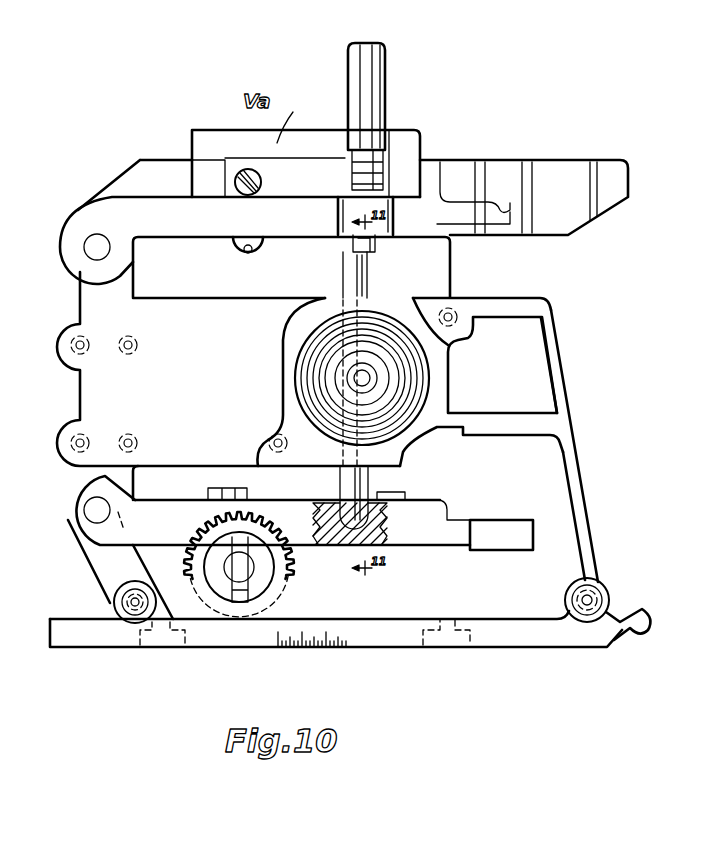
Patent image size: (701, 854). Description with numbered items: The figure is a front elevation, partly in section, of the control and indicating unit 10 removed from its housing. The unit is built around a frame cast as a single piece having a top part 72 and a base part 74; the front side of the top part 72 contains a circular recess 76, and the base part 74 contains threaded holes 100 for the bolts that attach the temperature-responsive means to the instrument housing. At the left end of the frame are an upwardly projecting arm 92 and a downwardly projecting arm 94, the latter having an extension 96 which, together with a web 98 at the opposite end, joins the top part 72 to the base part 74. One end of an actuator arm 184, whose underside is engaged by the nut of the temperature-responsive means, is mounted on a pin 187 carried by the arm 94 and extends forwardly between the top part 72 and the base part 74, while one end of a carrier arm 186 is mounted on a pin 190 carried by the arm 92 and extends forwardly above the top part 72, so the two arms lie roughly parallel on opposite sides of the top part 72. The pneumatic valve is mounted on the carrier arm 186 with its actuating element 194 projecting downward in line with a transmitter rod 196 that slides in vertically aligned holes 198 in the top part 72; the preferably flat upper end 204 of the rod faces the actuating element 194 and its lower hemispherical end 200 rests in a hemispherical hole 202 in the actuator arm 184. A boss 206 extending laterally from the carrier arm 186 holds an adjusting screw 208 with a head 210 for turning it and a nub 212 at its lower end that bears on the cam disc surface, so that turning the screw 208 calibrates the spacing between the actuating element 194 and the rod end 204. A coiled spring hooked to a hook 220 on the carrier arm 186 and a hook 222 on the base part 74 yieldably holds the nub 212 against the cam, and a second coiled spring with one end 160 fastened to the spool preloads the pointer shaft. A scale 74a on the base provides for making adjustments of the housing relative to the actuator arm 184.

The assembly 10 is at (594, 466).
The top part 72 is at (204, 396).
The base part 74 is at (548, 645).
The scale 74a is at (297, 648).
The circular recess 76 is at (405, 333).
The upwardly projecting arm 92 is at (133, 262).
The downwardly projecting arm 94 is at (100, 470).
The extension 96 is at (105, 566).
The web 98 is at (588, 525).
The threaded holes 100 is at (455, 620).
The end of coiled spring 160 is at (372, 362).
The actuator arm 184 is at (448, 540).
The carrier arm 186 is at (200, 224).
The pin 187 is at (92, 518).
The pin 190 is at (85, 247).
The actuating element 194 is at (350, 245).
The transmitter rod 196 is at (325, 300).
The vertically aligned holes 198 is at (372, 300).
The lower hemispherical end 200 is at (340, 498).
The hemispherical hole 202 is at (402, 513).
The upper end 204 is at (340, 248).
The boss 206 is at (343, 197).
The adjusting screw 208 is at (377, 158).
The head 210 is at (384, 70).
The nub 212 is at (372, 252).
The hook 220 is at (512, 195).
The hook 222 is at (647, 597).